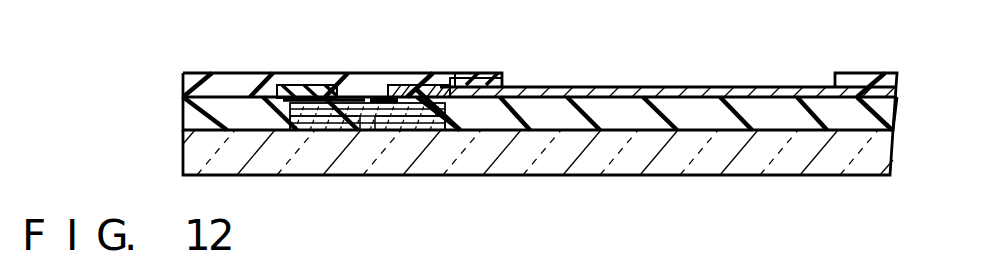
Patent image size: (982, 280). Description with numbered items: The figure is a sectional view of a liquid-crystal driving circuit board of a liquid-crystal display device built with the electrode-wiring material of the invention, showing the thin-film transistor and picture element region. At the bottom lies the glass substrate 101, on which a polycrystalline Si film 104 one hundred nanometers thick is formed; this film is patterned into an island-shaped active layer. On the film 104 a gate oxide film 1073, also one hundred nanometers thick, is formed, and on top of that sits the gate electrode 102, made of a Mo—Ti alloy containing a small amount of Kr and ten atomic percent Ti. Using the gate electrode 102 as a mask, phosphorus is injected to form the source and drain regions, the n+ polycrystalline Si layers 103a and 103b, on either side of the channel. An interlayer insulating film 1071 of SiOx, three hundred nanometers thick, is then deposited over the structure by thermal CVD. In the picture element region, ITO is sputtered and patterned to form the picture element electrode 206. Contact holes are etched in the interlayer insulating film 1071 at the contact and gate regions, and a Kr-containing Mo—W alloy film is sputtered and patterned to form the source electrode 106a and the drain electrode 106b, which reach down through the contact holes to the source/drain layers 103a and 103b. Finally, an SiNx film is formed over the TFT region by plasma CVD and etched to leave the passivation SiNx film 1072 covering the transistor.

The glass substrate 101 is at (667, 167).
The gate electrode 102 is at (373, 97).
The n+ polycrystalline Si layer 103a is at (438, 132).
The n+ polycrystalline Si layer 103b is at (313, 127).
The polycrystalline Si film 104 is at (373, 133).
The source electrode 106a is at (317, 83).
The drain electrode 106b is at (468, 75).
The interlayer insulating film 1071 is at (770, 190).
The passivation SiNx film 1072 is at (863, 36).
The gate oxide film 1073 is at (432, 130).
The picture element electrode 206 is at (718, 97).